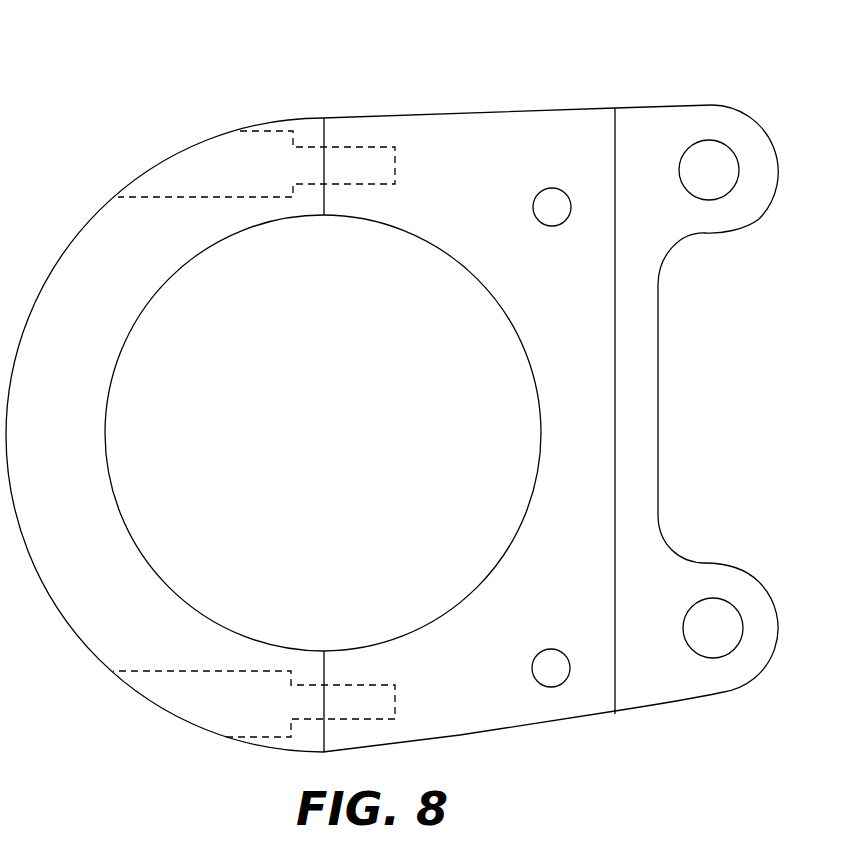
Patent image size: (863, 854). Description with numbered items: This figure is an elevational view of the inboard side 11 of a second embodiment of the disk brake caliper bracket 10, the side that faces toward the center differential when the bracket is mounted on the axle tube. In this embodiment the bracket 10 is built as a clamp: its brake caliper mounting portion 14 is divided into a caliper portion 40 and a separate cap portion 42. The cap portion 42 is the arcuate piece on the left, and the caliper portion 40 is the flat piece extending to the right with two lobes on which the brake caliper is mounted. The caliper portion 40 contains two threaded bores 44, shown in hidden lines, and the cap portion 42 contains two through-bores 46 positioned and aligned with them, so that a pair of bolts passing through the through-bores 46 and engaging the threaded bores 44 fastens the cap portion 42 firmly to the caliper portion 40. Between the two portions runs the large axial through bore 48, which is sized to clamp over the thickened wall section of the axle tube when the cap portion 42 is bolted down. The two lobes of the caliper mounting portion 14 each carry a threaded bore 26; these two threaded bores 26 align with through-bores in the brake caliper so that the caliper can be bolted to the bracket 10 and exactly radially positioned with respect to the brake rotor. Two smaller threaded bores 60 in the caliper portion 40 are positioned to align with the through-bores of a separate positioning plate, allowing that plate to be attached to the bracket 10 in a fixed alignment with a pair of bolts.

The disk brake caliper bracket 10 is at (410, 60).
The inboard side 11 is at (480, 138).
The brake caliper mounting portion 14 is at (735, 122).
The threaded bores 26 is at (730, 191).
The caliper portion 40 is at (437, 135).
The cap portion 42 is at (80, 268).
The threaded bores 44 is at (361, 145).
The through-bores 46 is at (272, 123).
The axial through bore 48 is at (106, 452).
The threaded bores 60 is at (566, 193).